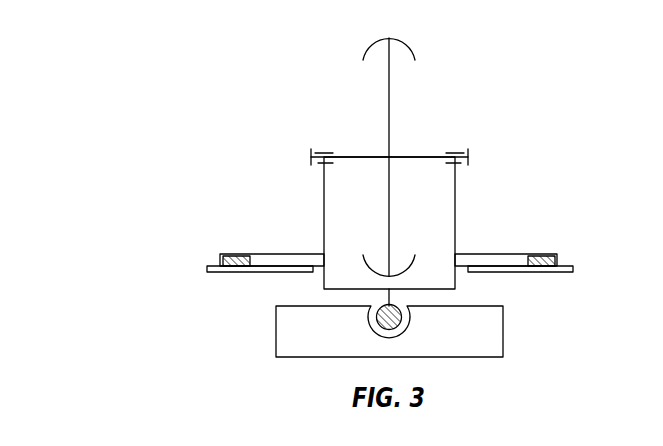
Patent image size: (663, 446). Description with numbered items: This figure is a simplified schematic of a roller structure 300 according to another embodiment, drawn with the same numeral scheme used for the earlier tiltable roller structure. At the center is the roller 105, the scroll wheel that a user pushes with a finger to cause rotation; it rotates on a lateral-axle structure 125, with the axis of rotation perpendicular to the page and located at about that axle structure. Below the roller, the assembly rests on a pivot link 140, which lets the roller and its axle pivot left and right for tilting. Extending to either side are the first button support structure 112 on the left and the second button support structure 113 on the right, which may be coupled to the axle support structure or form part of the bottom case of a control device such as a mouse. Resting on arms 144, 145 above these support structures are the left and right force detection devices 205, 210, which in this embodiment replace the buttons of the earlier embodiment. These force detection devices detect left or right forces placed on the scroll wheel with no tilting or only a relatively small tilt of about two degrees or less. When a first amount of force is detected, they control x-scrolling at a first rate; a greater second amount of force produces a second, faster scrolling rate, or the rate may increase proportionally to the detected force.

The roller structure 300 is at (107, 96).
The roller 105 is at (390, 118).
The lateral-axle structure 125 is at (469, 151).
The left arm 144 is at (249, 253).
The right arm 145 is at (522, 253).
The left force detection device 205 is at (222, 258).
The right force detection device 210 is at (556, 259).
The first button support structure 112 is at (257, 274).
The second button support structure 113 is at (519, 274).
The pivot link 140 is at (411, 320).